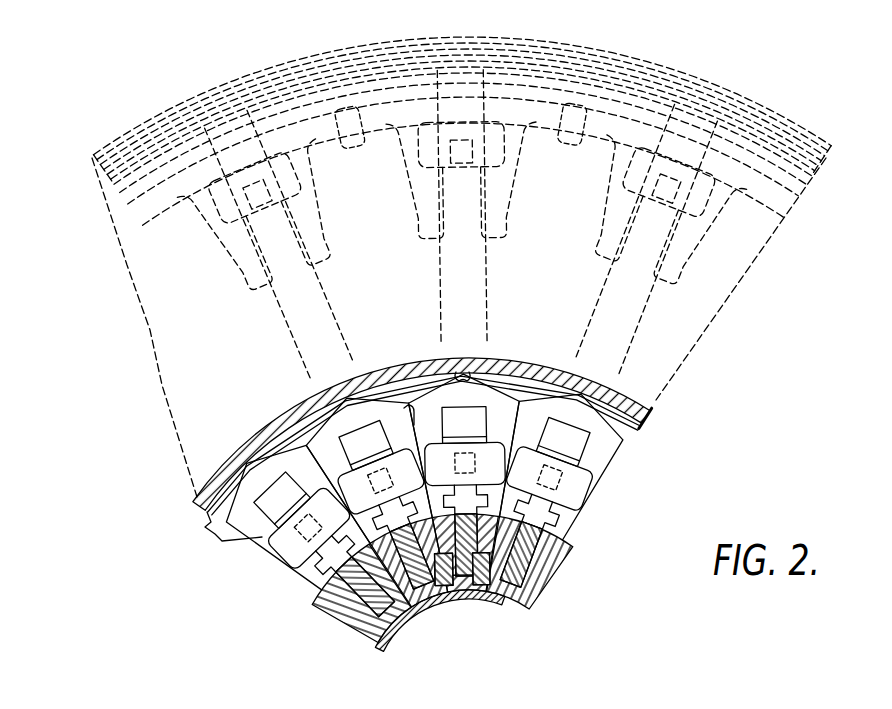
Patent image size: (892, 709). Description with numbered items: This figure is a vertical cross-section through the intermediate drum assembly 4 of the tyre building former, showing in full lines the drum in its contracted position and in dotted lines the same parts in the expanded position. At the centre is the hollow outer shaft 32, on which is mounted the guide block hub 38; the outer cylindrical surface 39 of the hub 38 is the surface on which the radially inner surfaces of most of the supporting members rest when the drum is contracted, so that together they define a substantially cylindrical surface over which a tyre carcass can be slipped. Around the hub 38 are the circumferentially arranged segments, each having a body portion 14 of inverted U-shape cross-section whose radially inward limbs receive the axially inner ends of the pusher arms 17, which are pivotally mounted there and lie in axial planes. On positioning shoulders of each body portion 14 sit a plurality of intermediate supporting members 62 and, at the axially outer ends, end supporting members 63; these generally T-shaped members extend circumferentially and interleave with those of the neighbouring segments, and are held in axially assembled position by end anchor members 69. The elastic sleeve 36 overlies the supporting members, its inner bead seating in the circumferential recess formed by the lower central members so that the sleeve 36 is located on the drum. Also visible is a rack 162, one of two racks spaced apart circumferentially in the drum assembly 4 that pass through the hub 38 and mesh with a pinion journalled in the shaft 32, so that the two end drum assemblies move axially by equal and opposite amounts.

The intermediate supporting member 62 is at (357, 57).
The elastic sleeve 36 is at (713, 90).
The end supporting member 63 is at (340, 143).
The pusher arm 17 is at (476, 331).
The body portion 14 is at (347, 397).
The end anchor member 69 is at (409, 410).
The intermediate drum assembly 4 is at (612, 537).
The cylindrical surface of the guide block hub 39 is at (571, 548).
The hub 38 is at (354, 629).
The hollow outer shaft 32 is at (386, 647).
The rack 162 is at (482, 600).